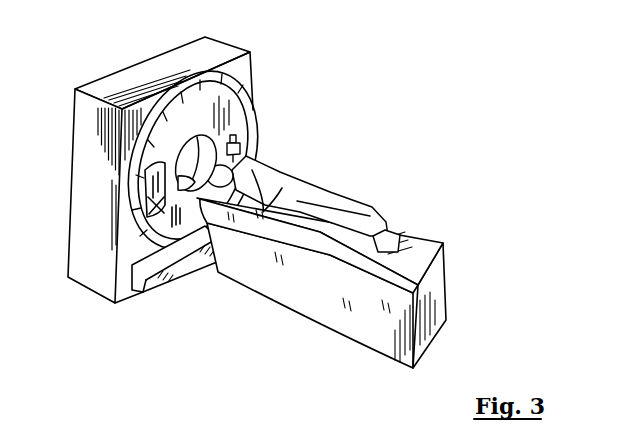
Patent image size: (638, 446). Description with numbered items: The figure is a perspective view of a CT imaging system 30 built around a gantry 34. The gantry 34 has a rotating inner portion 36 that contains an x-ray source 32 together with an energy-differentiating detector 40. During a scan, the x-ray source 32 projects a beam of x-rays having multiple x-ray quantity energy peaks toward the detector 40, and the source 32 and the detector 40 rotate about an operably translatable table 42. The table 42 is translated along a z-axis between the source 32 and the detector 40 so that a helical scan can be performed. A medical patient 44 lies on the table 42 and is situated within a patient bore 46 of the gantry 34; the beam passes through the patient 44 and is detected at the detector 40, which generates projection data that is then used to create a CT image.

The CT imaging system 30 is at (257, 202).
The x-ray source 32 is at (242, 149).
The gantry 34 is at (92, 111).
The rotating inner portion 36 is at (254, 105).
The energy-differentiating detector 40 is at (165, 207).
The operably translatable table 42 is at (388, 226).
The medical patient 44 is at (258, 184).
The patient bore 46 is at (227, 114).